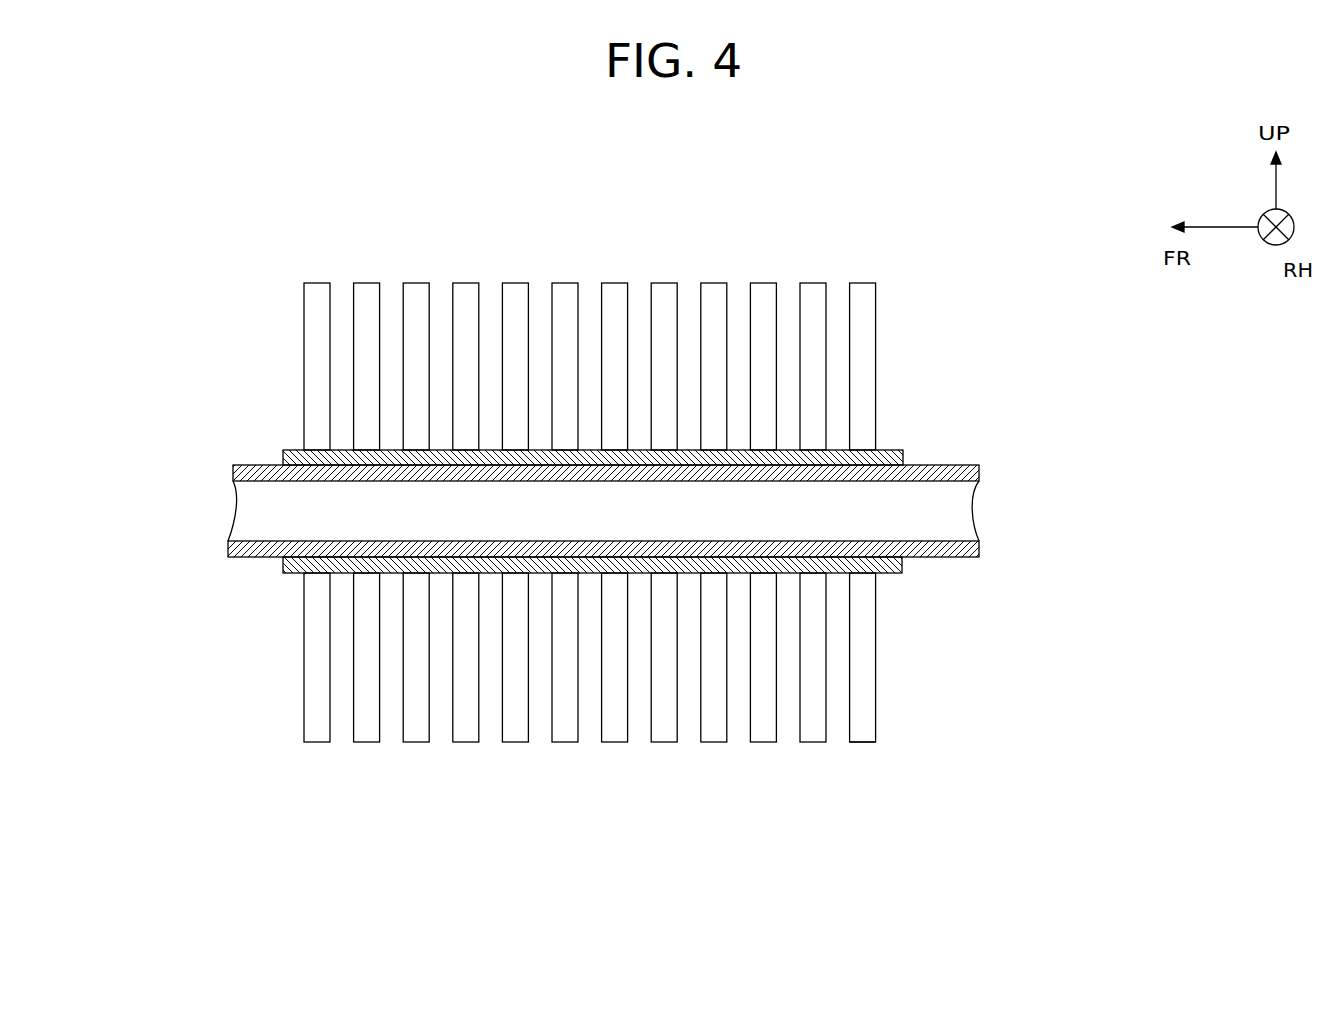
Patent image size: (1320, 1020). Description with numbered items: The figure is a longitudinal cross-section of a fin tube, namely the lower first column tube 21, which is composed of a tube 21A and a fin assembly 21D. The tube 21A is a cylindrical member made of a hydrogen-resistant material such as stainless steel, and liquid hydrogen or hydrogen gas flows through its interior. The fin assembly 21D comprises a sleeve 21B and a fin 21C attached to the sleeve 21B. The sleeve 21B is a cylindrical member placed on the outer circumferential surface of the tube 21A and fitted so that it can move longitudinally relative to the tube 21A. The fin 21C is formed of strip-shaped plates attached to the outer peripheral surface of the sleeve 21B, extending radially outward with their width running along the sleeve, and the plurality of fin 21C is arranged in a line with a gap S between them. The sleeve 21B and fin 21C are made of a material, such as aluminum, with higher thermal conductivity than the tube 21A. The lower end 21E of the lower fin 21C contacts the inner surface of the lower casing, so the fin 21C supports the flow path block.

The lower first column tube 21 is at (187, 515).
The tube 21A is at (955, 466).
The sleeve 21B is at (905, 450).
The fin 21C is at (875, 343).
The fin assembly 21D is at (710, 486).
The lower end 21E is at (876, 742).
The gap S is at (792, 303).